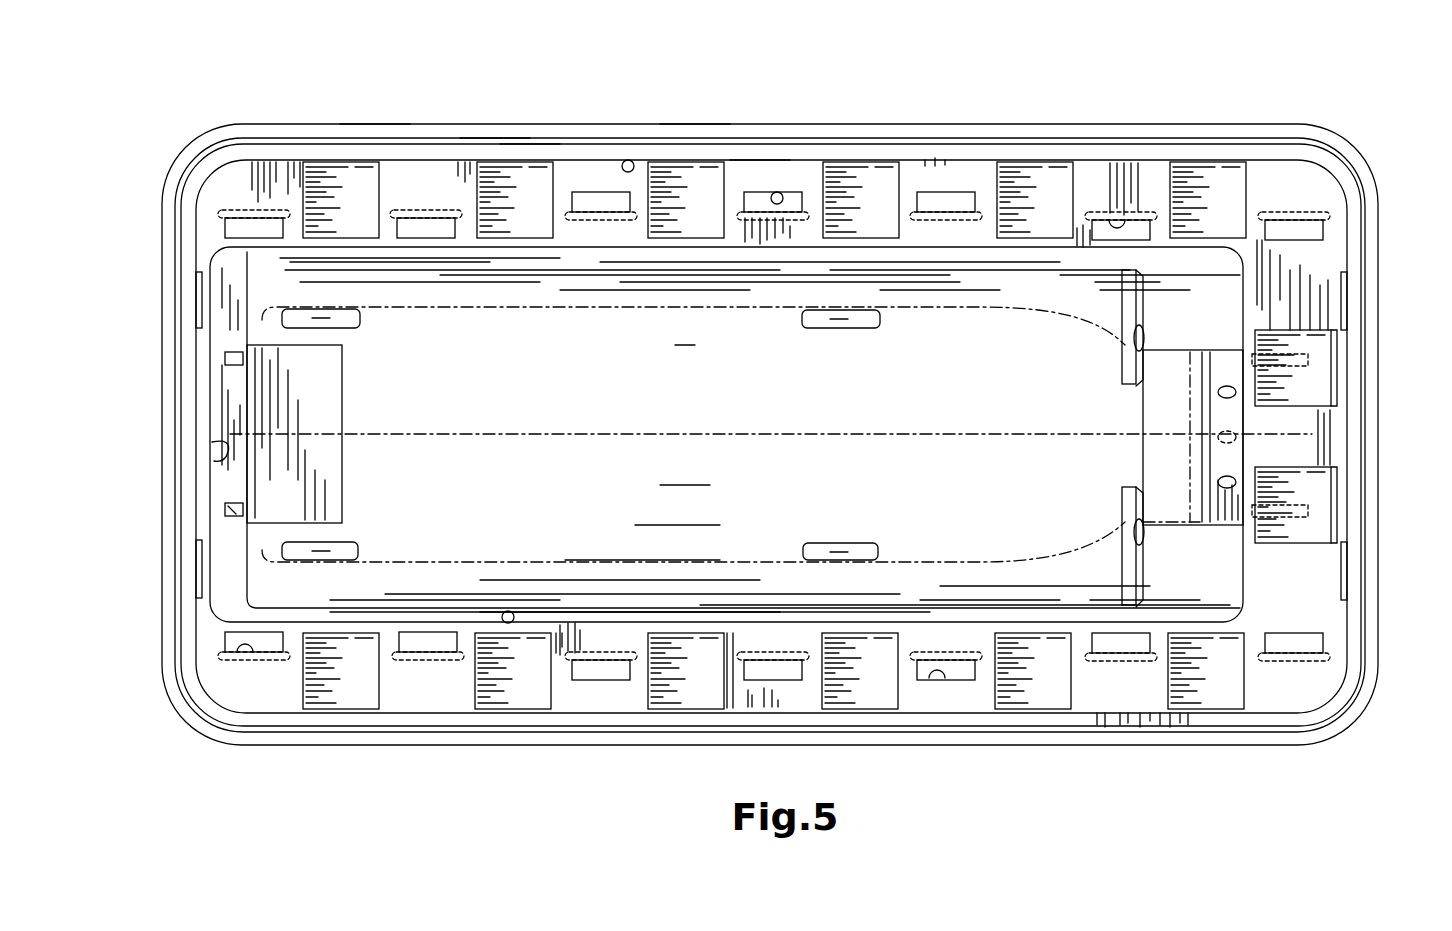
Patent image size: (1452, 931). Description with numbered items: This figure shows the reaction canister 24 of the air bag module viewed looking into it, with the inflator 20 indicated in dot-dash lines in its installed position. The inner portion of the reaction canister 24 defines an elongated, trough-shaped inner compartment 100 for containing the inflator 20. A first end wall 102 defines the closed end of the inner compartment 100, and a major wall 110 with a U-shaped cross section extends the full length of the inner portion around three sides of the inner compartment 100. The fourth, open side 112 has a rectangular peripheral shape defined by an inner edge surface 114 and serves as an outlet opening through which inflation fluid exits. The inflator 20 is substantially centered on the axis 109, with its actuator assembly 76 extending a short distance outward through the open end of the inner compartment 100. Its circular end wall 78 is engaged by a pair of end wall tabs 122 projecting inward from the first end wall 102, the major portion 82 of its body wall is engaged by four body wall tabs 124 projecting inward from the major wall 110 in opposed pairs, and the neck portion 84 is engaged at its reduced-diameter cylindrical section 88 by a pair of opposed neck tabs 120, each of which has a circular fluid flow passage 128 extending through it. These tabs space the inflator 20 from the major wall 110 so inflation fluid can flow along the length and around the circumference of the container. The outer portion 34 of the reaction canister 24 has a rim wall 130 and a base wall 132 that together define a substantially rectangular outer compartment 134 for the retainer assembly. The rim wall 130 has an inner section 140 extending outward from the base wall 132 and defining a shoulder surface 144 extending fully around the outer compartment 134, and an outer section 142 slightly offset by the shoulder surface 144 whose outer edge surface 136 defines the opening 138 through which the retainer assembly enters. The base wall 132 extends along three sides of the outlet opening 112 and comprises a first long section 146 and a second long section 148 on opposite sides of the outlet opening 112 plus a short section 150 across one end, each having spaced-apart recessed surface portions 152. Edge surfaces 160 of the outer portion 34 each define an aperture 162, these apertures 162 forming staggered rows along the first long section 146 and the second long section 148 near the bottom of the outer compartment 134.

The inflator 20 is at (405, 296).
The reaction canister 24 is at (174, 133).
The outer portion 34 is at (160, 186).
The actuator assembly 76 is at (1192, 420).
The end wall 78 is at (250, 393).
The major portion 82 is at (928, 563).
The neck portion 84 is at (1032, 342).
The cylindrical section 88 is at (1110, 522).
The inner compartment 100 is at (560, 416).
The first end wall 102 is at (212, 447).
The axis 109 is at (873, 433).
The major wall 110 is at (350, 598).
The open side 112 is at (639, 607).
The inner edge surface 114 is at (508, 624).
The neck tabs 120 is at (1122, 372).
The end wall tabs 122 is at (232, 358).
The body wall tabs 124 is at (345, 320).
The fluid flow passage 128 is at (1146, 336).
The rim wall 130 is at (368, 124).
The base wall 132 is at (261, 172).
The outer compartment 134 is at (405, 194).
The outer edge surface 136 is at (490, 138).
The opening 138 is at (528, 138).
The inner section 140 is at (630, 160).
The outer section 142 is at (693, 124).
The shoulder surface 144 is at (757, 158).
The first long section 146 is at (605, 632).
The second long section 148 is at (600, 228).
The short section 150 is at (1320, 272).
The recessed surface portions 152 is at (535, 178).
The edge surfaces 160 is at (790, 190).
The apertures 162 is at (801, 185).